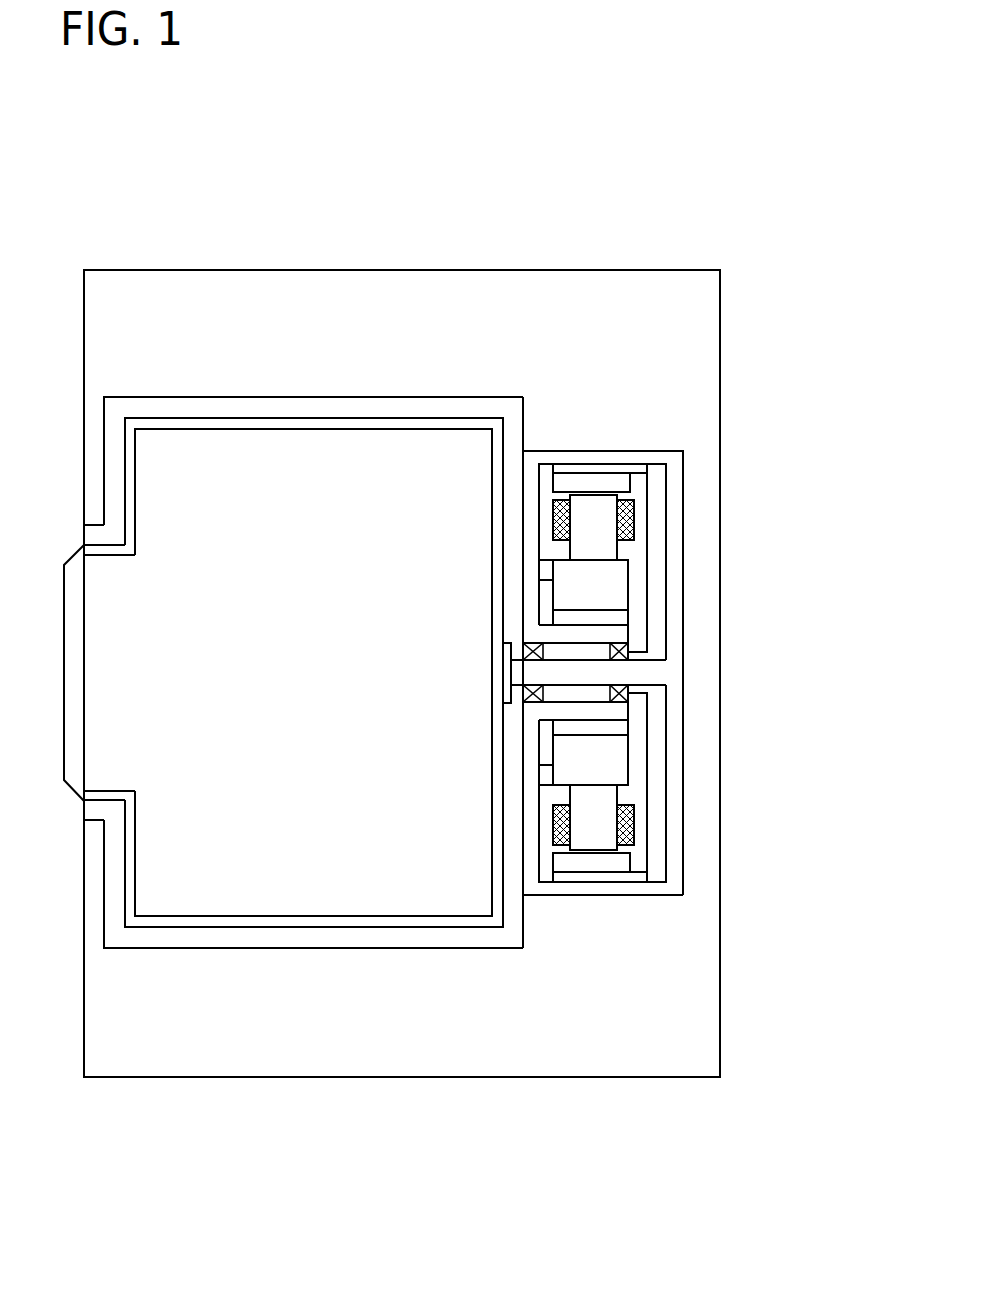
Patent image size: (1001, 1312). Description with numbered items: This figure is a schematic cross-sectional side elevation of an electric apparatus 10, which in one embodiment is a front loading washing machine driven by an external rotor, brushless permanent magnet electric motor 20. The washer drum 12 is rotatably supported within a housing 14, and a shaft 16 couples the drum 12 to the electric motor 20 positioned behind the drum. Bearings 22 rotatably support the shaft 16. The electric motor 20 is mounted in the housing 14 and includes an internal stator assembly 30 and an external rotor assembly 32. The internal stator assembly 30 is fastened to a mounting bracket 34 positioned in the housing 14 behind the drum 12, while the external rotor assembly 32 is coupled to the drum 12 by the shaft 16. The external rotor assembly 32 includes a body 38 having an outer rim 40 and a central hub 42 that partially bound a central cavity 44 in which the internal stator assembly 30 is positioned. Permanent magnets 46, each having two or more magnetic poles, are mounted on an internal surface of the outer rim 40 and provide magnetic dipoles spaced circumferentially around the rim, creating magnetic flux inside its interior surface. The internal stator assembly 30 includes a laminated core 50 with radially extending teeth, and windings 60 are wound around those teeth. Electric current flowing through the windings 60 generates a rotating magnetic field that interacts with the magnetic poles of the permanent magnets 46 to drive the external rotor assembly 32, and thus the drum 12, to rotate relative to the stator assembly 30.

The electric apparatus 10 is at (698, 222).
The washer drum 12 is at (185, 948).
The housing 14 is at (268, 1078).
The shaft 16 is at (660, 688).
The electric motor 20 is at (645, 925).
The bearings 22 is at (640, 645).
The internal stator assembly 30 is at (552, 789).
The external rotor assembly 32 is at (667, 803).
The mounting bracket 34 is at (523, 519).
The body 38 is at (668, 460).
The outer rim 40 is at (583, 883).
The central hub 42 is at (637, 698).
The central cavity 44 is at (645, 568).
The permanent magnets 46 is at (630, 483).
The laminated core 50 is at (625, 558).
The windings 60 is at (633, 833).